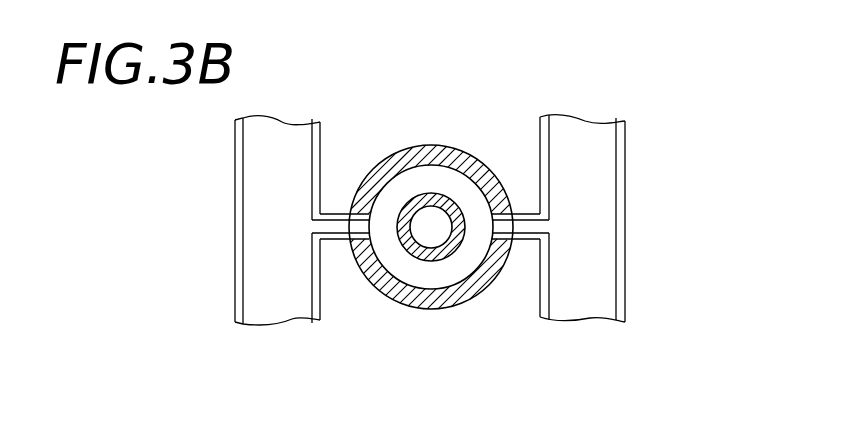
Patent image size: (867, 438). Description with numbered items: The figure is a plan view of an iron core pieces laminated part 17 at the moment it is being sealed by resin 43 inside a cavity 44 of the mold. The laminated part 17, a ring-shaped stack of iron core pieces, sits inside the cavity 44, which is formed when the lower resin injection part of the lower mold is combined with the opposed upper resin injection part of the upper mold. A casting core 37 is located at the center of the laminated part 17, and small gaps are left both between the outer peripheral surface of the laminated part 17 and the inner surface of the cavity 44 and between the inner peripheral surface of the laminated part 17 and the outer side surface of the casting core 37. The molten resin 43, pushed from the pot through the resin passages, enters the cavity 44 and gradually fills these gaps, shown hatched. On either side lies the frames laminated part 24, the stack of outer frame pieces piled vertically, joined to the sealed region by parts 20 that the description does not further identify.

The iron core pieces laminated part 17 is at (393, 192).
The connecting arm 20 is at (333, 240).
The frames laminated part 24 is at (628, 160).
The casting core 37 is at (430, 212).
The resin 43 is at (458, 197).
The cavity 44 is at (401, 298).